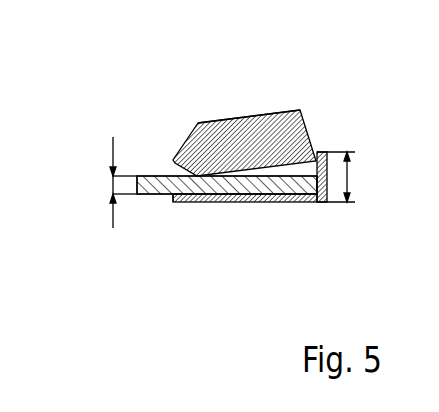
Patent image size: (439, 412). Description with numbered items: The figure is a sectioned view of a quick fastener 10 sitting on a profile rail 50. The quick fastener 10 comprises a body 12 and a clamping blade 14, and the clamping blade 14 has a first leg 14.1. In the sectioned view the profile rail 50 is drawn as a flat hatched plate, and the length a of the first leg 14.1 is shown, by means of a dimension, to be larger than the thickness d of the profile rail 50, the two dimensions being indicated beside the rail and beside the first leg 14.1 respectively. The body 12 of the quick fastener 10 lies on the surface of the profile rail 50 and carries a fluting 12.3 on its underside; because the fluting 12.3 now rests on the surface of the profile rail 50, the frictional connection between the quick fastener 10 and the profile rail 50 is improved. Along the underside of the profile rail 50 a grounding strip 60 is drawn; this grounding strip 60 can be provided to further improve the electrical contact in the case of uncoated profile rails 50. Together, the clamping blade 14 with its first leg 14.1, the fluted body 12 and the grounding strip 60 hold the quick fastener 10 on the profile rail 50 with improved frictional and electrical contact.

The quick fastener 10 is at (297, 73).
The body 12 is at (265, 115).
The fluting 12.3 is at (223, 121).
The clamping blade 14 is at (222, 203).
The first leg 14.1 is at (312, 203).
The profile rail 50 is at (256, 203).
The grounding strip 60 is at (185, 203).
The thickness d is at (112, 183).
The length a is at (350, 177).